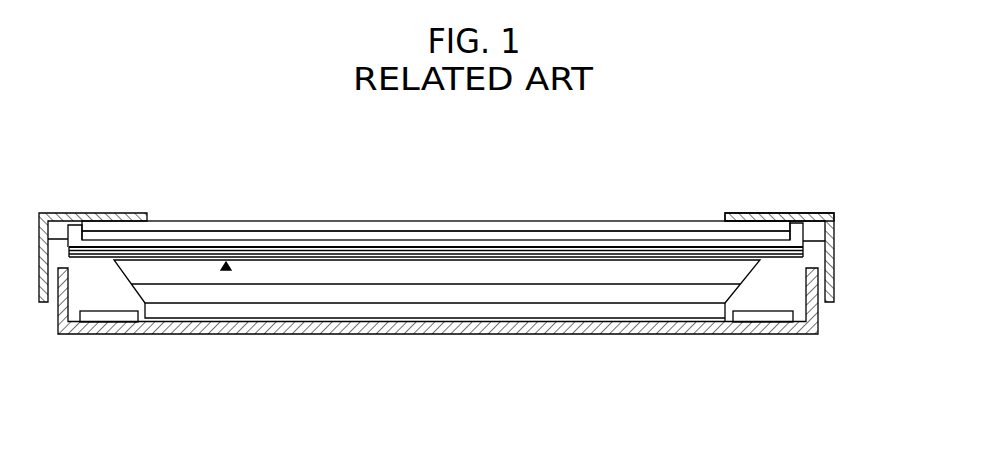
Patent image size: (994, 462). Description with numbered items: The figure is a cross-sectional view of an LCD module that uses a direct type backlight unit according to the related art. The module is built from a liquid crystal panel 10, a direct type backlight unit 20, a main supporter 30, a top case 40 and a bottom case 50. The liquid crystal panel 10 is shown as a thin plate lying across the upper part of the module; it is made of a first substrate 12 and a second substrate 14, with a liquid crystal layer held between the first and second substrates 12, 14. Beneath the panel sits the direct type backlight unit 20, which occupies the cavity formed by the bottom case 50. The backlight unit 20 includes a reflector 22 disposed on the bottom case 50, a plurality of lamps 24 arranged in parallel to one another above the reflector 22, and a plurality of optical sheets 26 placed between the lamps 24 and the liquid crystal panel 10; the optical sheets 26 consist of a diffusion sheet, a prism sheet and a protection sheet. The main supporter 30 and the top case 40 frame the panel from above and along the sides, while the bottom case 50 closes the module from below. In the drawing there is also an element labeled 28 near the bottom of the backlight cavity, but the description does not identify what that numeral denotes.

The liquid crystal panel 10 is at (436, 172).
The first substrate 12 is at (245, 234).
The second substrate 14 is at (200, 226).
The direct type backlight unit 20 is at (436, 332).
The reflector 22 is at (185, 317).
The lamps 24 is at (160, 287).
The optical sheets 26 is at (226, 271).
The light source housing 28 is at (217, 377).
The main supporter 30 is at (834, 246).
The top case 40 is at (780, 215).
The bottom case 50 is at (815, 313).